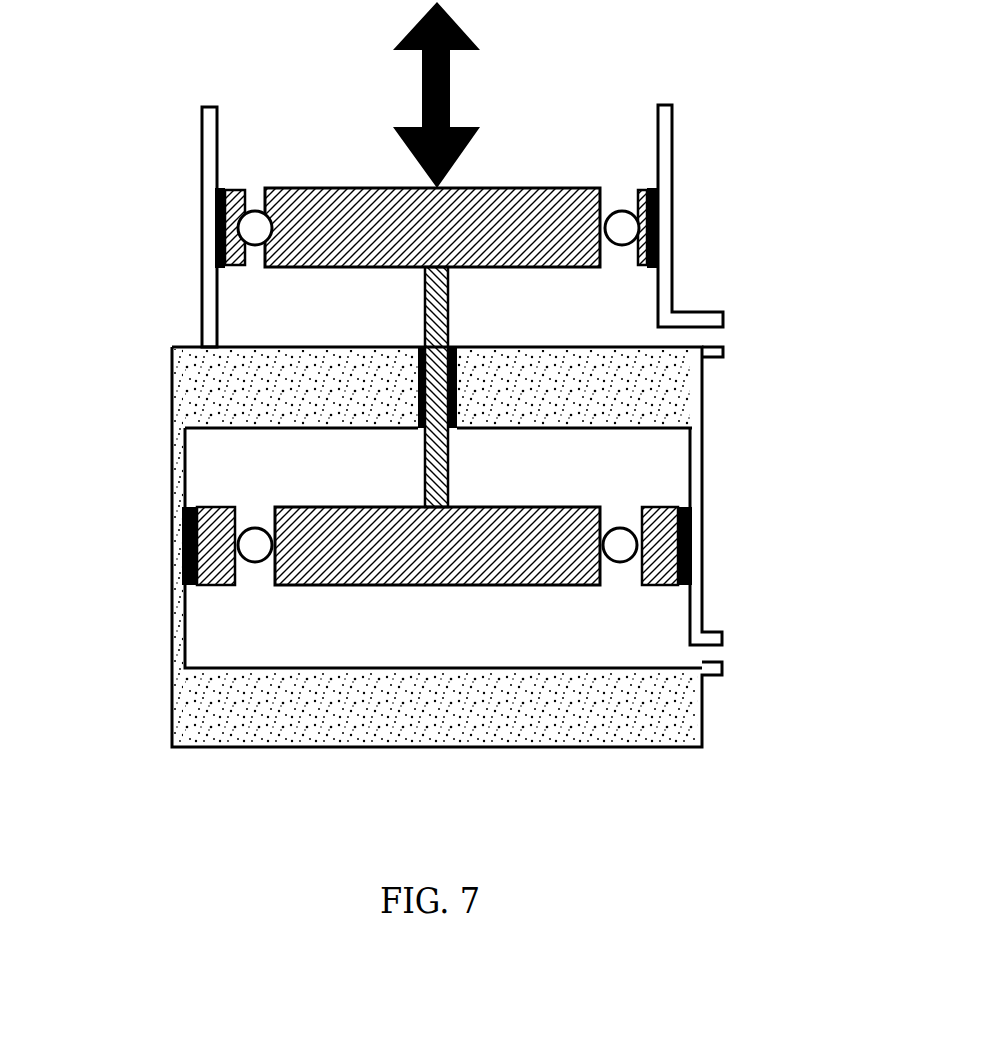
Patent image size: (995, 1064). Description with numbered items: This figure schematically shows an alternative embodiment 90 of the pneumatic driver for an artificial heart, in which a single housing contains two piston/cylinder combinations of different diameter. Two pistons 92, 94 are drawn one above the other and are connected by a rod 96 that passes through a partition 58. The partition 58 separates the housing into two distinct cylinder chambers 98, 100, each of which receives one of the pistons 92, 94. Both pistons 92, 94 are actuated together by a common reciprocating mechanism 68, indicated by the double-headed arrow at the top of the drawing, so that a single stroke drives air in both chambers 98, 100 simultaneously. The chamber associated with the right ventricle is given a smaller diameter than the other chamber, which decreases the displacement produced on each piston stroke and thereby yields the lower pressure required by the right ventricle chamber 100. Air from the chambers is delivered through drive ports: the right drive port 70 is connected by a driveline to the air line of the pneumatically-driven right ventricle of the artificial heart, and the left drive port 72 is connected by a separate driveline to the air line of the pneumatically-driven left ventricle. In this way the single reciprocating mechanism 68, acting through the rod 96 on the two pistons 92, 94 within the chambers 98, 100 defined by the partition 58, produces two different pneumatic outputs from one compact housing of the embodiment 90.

The common reciprocating mechanism 68 is at (452, 88).
The piston 92 is at (453, 217).
The embodiment 90 is at (735, 232).
The right drive port 70 is at (715, 333).
The cylinder chamber 98 is at (280, 290).
The rod 96 is at (437, 322).
The partition 58 is at (258, 373).
The piston 94 is at (468, 557).
The cylinder chamber 100 is at (632, 617).
The left drive port 72 is at (708, 654).